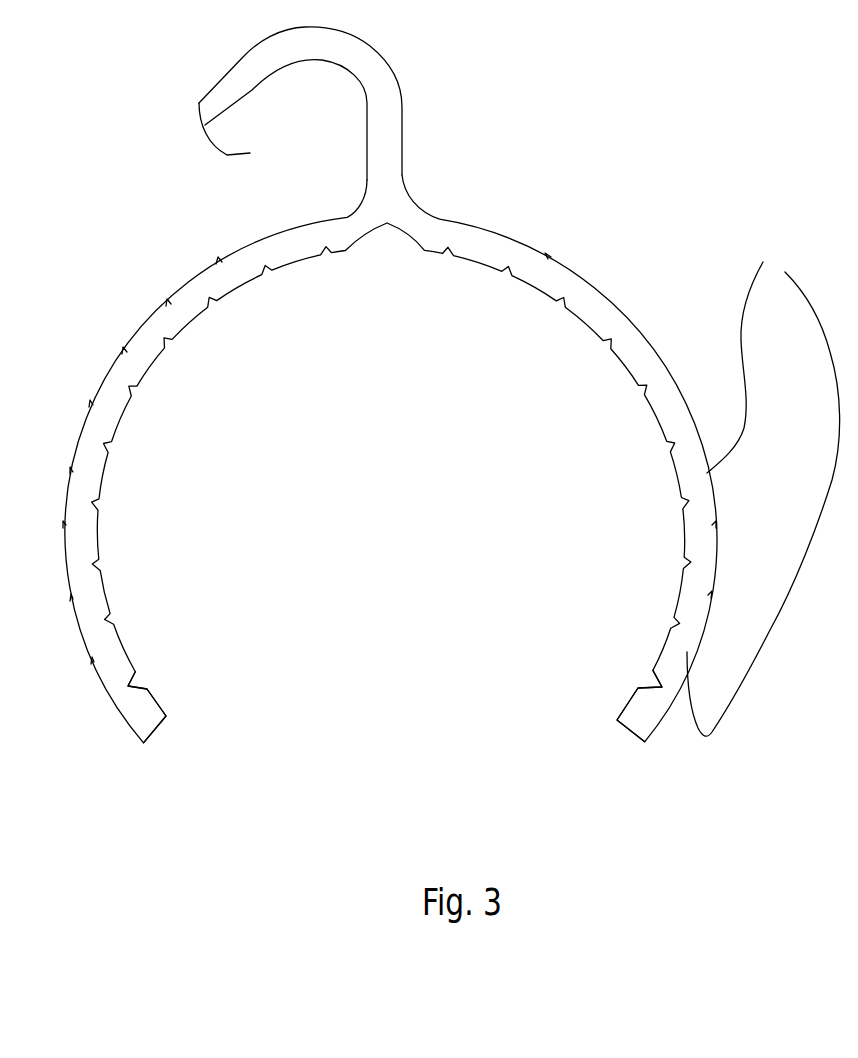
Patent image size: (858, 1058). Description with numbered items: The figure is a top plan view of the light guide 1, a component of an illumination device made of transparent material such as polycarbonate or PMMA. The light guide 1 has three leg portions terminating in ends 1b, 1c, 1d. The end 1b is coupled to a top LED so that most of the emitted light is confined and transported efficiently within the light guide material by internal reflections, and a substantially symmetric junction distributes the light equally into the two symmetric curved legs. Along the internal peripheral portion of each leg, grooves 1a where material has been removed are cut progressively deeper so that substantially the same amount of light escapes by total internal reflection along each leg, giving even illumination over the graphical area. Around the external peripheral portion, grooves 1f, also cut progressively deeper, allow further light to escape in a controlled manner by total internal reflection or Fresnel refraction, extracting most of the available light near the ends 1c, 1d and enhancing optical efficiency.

The light guide 1 is at (493, 202).
The grooves 1a is at (687, 563).
The end 1b is at (250, 153).
The end 1c is at (153, 733).
The end 1d is at (630, 727).
The grooves 1f is at (602, 294).